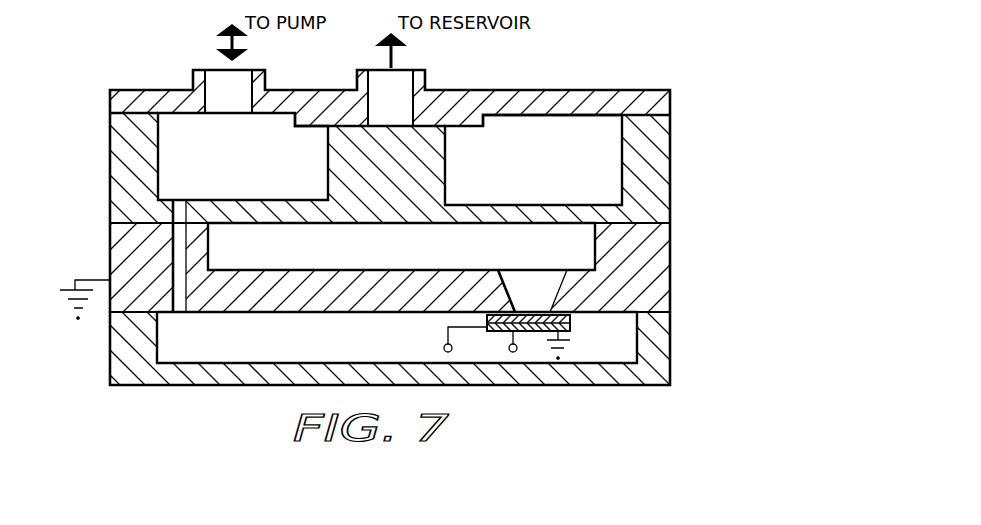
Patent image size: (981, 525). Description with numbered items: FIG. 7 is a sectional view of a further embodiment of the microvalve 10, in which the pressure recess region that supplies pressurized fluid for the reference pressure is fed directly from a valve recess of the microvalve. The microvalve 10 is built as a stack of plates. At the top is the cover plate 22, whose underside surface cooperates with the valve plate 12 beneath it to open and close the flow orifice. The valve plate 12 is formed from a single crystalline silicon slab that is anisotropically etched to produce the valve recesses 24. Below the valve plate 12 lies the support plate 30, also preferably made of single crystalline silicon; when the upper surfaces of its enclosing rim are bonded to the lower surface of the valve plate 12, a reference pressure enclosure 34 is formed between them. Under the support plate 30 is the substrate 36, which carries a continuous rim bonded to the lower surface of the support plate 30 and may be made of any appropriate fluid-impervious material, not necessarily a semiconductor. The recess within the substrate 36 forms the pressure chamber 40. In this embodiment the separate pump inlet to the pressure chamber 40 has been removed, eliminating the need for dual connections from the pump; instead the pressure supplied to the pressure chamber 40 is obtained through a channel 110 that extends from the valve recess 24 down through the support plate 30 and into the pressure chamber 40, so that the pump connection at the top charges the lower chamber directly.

The microvalve 10 is at (598, 75).
The cover plate 22 is at (670, 108).
The valve plate 12 is at (684, 118).
The valve recess 24 is at (284, 176).
The support plate 30 is at (684, 232).
The reference pressure enclosure 34 is at (444, 258).
The substrate 36 is at (684, 318).
The pressure chamber 40 is at (270, 352).
The channel 110 is at (183, 262).